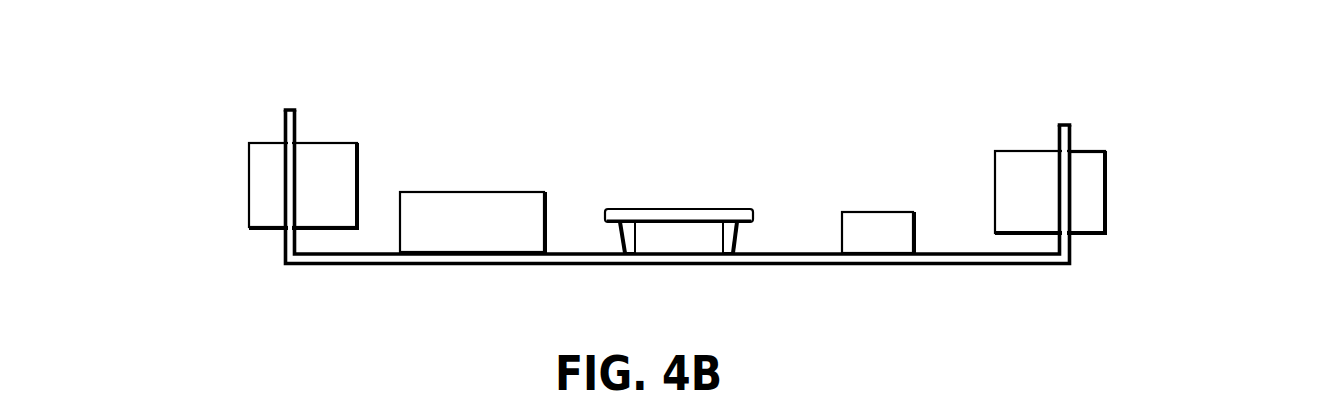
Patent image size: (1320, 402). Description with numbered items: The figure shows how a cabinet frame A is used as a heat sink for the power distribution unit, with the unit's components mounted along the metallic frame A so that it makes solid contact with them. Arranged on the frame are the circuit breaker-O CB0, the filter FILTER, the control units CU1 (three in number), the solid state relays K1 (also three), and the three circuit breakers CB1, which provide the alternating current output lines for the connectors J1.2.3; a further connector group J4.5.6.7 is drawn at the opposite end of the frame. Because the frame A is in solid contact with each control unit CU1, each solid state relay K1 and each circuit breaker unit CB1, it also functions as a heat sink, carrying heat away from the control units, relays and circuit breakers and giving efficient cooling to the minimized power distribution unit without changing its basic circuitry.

The connectors J4, J5, J6, J7 J4.5.6.7 is at (257, 182).
The circuit breaker-O CB0 is at (319, 187).
The circuit breaker CB1 is at (1022, 152).
The connectors J1, J2, J3 and circuit breakers CB1, CB2, CB3 J1.2.3 is at (1105, 187).
The cabinet frame A is at (972, 270).
The filter FILTER is at (472, 222).
The control unit CU1 is at (705, 213).
The solid state relay K1 is at (887, 213).